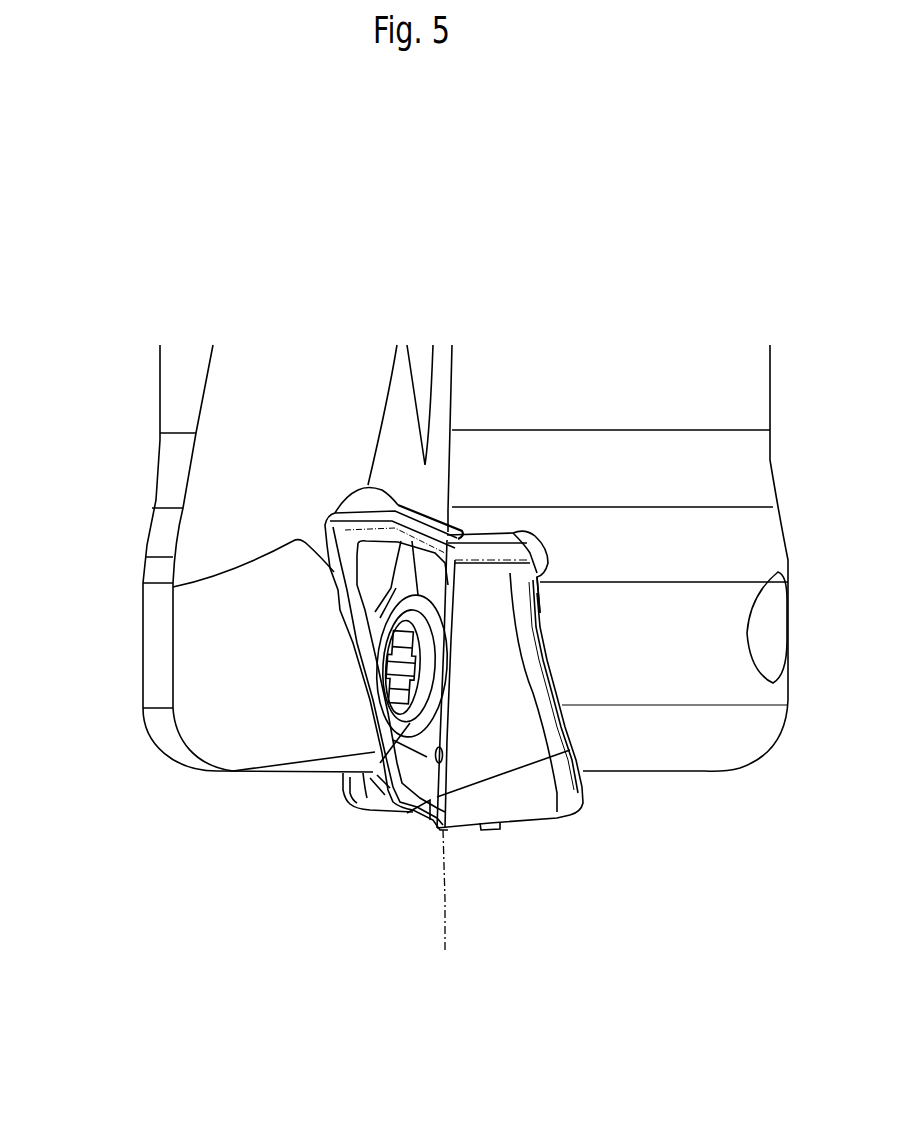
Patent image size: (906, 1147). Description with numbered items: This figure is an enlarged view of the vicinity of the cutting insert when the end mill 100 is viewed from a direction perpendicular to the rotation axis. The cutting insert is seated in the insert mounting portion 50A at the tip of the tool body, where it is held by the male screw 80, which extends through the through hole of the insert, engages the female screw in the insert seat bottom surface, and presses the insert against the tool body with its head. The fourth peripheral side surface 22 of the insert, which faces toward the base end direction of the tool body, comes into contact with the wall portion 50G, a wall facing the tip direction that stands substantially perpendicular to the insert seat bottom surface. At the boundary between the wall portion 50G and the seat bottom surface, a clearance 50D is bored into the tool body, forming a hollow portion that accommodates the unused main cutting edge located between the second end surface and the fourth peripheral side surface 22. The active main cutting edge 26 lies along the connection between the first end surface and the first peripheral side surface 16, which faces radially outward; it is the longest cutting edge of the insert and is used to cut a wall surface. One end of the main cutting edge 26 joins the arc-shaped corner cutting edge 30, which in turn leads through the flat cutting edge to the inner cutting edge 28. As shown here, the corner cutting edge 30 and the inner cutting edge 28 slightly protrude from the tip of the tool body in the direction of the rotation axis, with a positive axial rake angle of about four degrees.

The end mill 100 is at (182, 857).
The first peripheral side surface 16 is at (510, 745).
The fourth peripheral side surface 22 is at (395, 520).
The main cutting edge 26 is at (443, 756).
The inner cutting edge 28 is at (421, 810).
The corner cutting edge 30 is at (449, 906).
The insert mounting portion 50A is at (559, 678).
The clearance 50D is at (550, 553).
The wall portion 50G is at (443, 830).
The male screw 80 is at (366, 803).